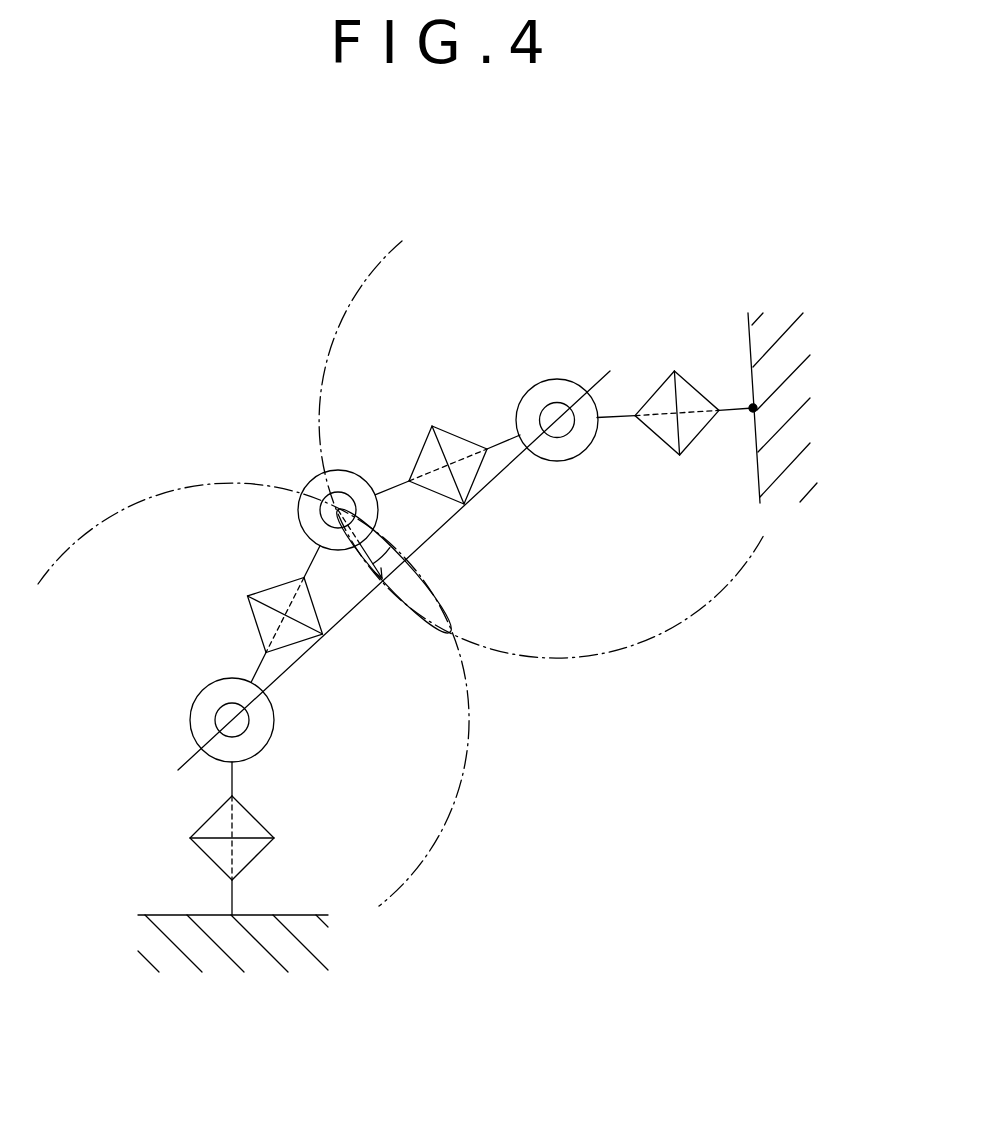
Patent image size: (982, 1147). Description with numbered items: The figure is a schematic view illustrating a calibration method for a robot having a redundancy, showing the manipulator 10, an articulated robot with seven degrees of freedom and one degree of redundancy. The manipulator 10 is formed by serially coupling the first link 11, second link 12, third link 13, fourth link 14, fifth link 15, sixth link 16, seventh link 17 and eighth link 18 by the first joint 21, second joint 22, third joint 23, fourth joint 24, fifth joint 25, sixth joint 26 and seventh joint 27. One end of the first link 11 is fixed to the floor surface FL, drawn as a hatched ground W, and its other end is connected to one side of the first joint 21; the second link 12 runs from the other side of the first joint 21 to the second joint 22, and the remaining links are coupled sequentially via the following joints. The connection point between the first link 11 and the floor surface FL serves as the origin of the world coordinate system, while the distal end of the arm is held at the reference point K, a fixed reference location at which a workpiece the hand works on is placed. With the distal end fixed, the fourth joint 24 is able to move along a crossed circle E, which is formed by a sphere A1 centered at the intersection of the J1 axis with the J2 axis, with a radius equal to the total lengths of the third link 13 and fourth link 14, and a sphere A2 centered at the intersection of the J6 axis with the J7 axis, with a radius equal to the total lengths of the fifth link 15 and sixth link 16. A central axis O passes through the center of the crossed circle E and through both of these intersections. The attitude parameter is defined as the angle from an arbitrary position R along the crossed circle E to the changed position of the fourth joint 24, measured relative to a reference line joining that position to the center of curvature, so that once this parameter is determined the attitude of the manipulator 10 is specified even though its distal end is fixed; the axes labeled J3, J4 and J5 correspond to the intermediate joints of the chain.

The manipulator 10 is at (160, 398).
The first link 11 is at (232, 895).
The second link 12 is at (233, 777).
The third link 13 is at (257, 664).
The fourth link 14 is at (313, 558).
The fifth link 15 is at (397, 487).
The sixth link 16 is at (504, 443).
The seventh link 17 is at (615, 421).
The eighth link 18 is at (732, 410).
The first joint 21 is at (208, 822).
The second joint 22 is at (200, 692).
The third joint 23 is at (267, 585).
The fourth joint 24 is at (310, 483).
The fifth joint 25 is at (422, 445).
The sixth joint 26 is at (522, 397).
The seventh joint 27 is at (658, 387).
The J1 axis J1 is at (227, 852).
The J2 axis J2 is at (217, 722).
The J3 axis J3 is at (283, 620).
The J4 axis J4 is at (298, 510).
The J5 axis J5 is at (467, 448).
The J6 axis J6 is at (562, 410).
The J7 axis J7 is at (697, 410).
The crossed circle E is at (427, 618).
The arbitrary position R is at (386, 583).
The central axis O is at (441, 526).
The reference point K is at (757, 408).
The floor surface FL is at (168, 915).
The ground / wall W is at (233, 917).
The sphere A1 is at (459, 783).
The sphere A2 is at (650, 638).